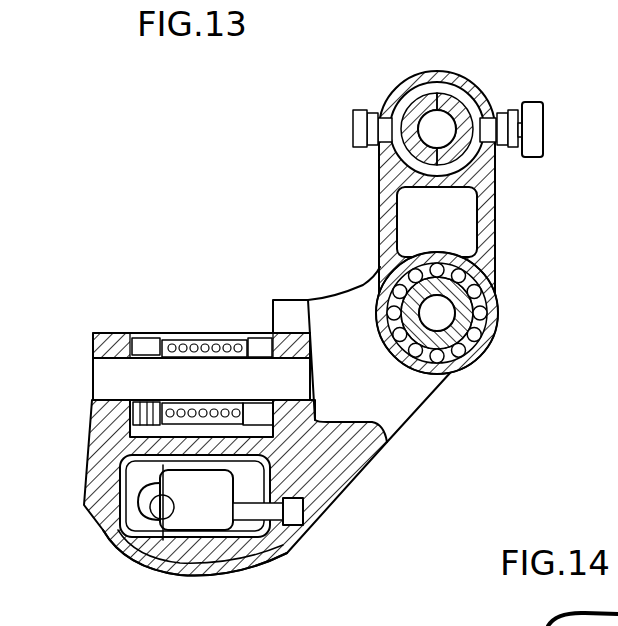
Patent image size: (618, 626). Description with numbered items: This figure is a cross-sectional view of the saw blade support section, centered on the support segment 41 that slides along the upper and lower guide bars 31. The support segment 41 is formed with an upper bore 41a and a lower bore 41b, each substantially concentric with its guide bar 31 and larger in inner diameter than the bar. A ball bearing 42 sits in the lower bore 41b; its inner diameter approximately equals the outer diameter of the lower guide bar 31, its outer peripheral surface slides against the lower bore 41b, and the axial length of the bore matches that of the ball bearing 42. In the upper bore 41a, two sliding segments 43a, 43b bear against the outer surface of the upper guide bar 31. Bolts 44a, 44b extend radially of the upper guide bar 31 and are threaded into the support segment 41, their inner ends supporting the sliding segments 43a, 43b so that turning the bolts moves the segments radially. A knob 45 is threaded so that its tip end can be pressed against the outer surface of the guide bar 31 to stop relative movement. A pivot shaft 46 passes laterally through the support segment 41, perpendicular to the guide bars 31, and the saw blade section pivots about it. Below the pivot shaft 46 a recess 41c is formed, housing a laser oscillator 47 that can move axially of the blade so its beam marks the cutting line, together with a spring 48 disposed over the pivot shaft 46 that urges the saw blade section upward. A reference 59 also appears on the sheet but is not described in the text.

In FIG. 13, the guide bar 31 is at (430, 88).
In FIG. 13, the support segment 41 is at (370, 462).
In FIG. 13, the upper bore 41a is at (458, 82).
In FIG. 13, the lower bore 41b is at (478, 278).
In FIG. 13, the recess 41c is at (153, 560).
In FIG. 13, the ball bearing 42 is at (494, 313).
In FIG. 13, the sliding segment 43a is at (490, 98).
In FIG. 13, the sliding segment 43b is at (393, 100).
In FIG. 13, the bolt 44a is at (493, 148).
In FIG. 13, the bolt 44b is at (382, 142).
In FIG. 13, the knob 45 is at (543, 128).
In FIG. 13, the pivot shaft 46 is at (100, 375).
In FIG. 13, the laser oscillator 47 is at (220, 523).
In FIG. 13, the spring 48 is at (197, 342).
In FIG. 14, the cover 59 is at (524, 612).